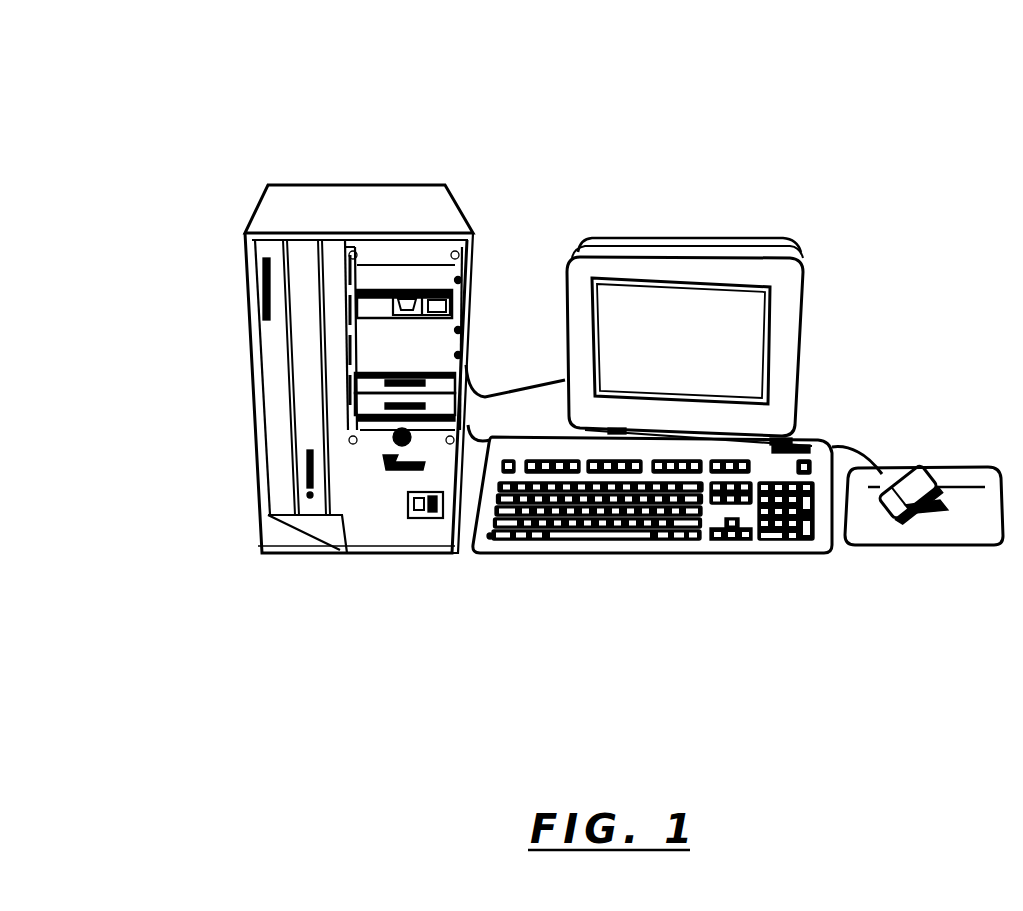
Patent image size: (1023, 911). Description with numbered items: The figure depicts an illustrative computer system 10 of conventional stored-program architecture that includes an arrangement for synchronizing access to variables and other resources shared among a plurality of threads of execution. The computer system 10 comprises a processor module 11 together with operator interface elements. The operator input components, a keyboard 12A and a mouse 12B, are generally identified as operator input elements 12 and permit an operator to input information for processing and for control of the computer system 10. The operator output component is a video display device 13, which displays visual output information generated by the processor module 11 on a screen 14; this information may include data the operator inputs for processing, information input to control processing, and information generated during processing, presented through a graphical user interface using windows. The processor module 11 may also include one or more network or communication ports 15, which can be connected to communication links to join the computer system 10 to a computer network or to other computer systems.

The computer system 10 is at (180, 108).
The processor module 11 is at (369, 184).
The operator input element(s) 12 is at (826, 604).
The keyboard 12A is at (696, 558).
The mouse 12B is at (985, 551).
The video display device 13 is at (806, 343).
The screen 14 is at (607, 318).
The network or communication ports 15 is at (250, 392).